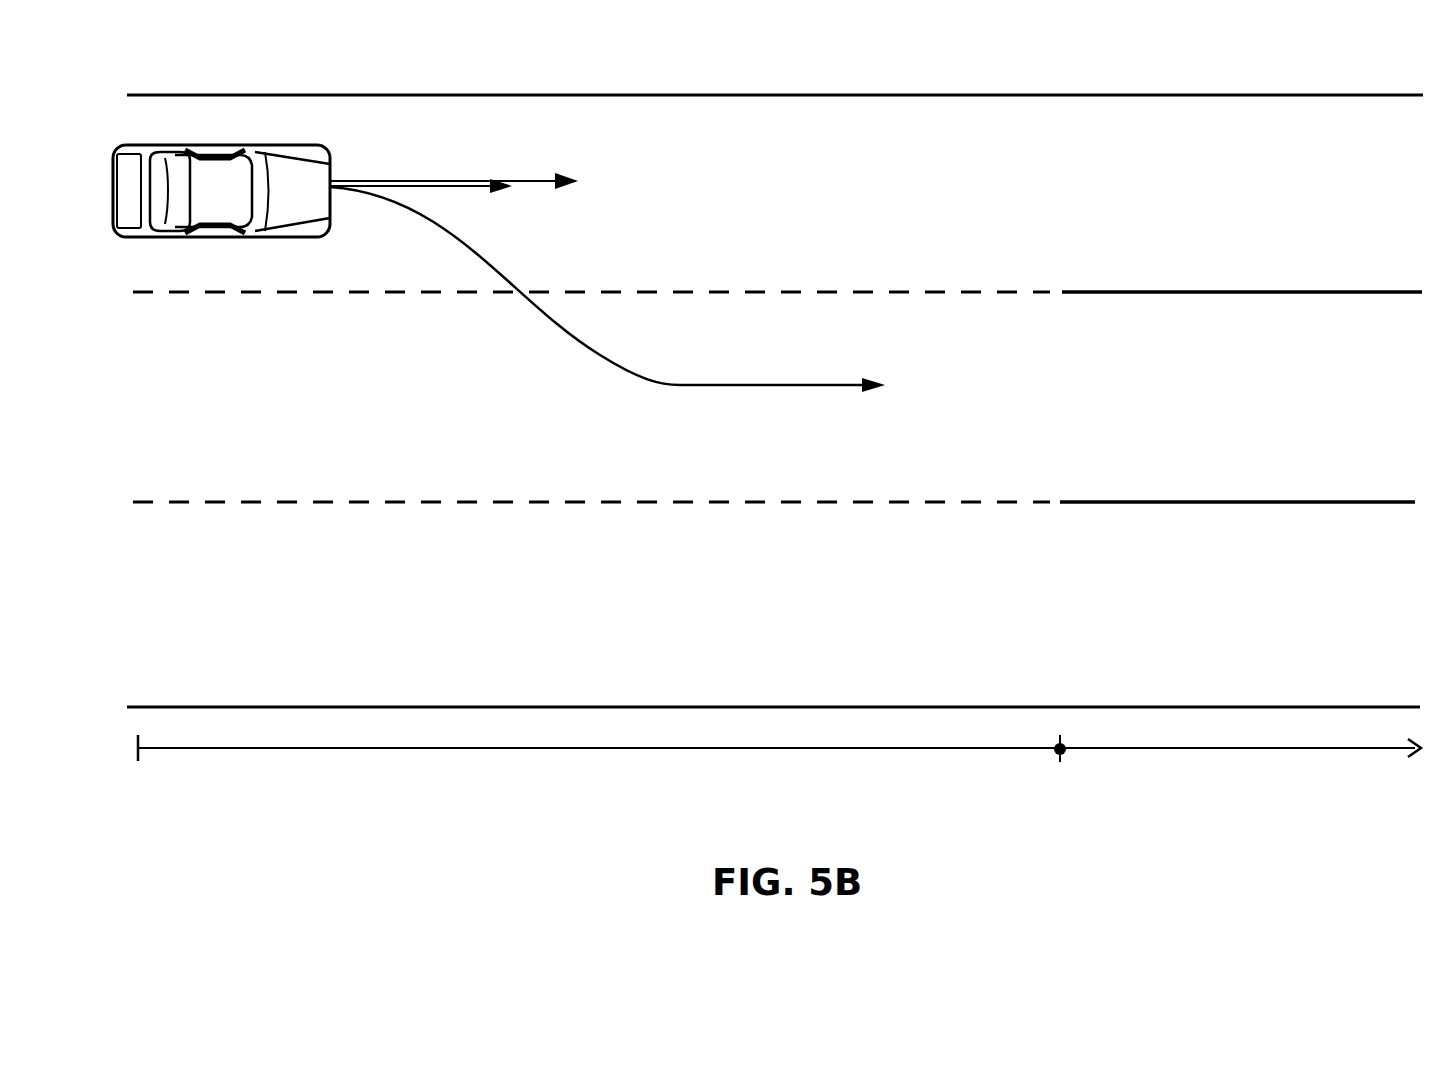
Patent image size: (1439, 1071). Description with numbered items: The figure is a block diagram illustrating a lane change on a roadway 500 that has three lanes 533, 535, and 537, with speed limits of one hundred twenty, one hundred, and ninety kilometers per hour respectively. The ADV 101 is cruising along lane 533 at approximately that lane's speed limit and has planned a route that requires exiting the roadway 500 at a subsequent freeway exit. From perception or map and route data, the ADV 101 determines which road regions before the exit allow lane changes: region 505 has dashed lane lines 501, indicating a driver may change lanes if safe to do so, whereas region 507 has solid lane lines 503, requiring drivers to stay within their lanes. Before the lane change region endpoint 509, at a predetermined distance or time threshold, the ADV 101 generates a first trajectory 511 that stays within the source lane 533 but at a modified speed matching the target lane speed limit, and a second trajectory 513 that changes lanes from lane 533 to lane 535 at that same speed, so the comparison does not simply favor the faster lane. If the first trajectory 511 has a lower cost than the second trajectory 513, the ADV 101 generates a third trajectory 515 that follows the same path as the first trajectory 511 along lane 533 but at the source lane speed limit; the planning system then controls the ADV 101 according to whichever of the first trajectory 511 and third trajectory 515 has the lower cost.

The ADV 101 is at (221, 191).
The roadway 500 is at (1078, 92).
The dashed lane lines 501 is at (850, 296).
The solid lane lines 503 is at (1160, 505).
The region 505 is at (560, 750).
The region 507 is at (1315, 752).
The lane change region endpoint 509 is at (1062, 752).
The first trajectory 511 is at (465, 192).
The second trajectory 513 is at (680, 386).
The third trajectory 515 is at (540, 178).
The lane 533 is at (1202, 204).
The lane 535 is at (1207, 413).
The lane 537 is at (1209, 601).